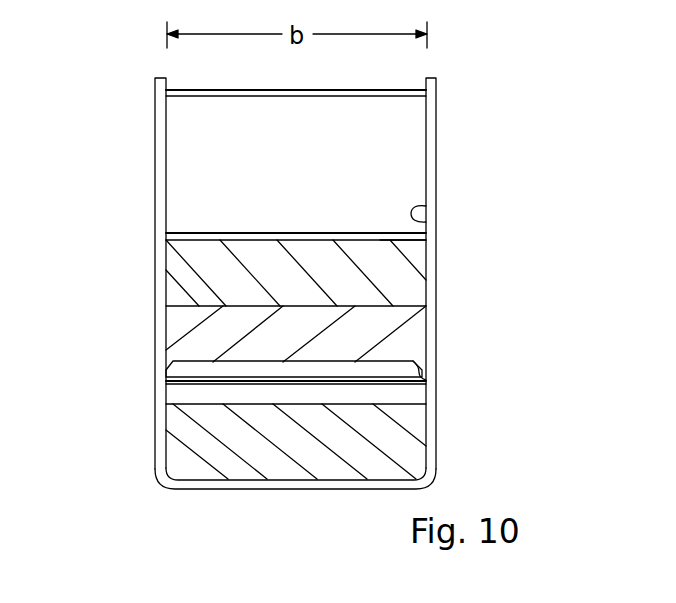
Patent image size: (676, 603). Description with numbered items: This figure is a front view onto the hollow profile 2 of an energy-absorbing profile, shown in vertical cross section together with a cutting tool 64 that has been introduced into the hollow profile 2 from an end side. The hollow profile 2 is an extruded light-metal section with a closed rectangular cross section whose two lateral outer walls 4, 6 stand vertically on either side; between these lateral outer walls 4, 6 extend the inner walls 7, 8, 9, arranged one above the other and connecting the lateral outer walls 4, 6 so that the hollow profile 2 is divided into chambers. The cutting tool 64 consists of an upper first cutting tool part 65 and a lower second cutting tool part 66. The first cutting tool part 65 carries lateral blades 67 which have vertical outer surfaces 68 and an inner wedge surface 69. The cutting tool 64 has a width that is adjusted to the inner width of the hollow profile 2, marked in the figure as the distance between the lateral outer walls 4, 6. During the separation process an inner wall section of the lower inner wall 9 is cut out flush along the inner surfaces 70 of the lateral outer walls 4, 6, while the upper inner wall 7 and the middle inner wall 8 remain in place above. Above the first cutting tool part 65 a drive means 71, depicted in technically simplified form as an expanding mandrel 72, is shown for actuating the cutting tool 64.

The hollow profile 2 is at (298, 283).
The lateral outer wall 4 is at (155, 162).
The lateral outer wall 6 is at (437, 175).
The inner wall 7 is at (190, 97).
The inner wall 8 is at (186, 232).
The inner wall 9 is at (173, 387).
The cutting tool 64 is at (426, 317).
The first cutting tool part 65 is at (180, 323).
The second cutting tool part 66 is at (180, 460).
The lateral blades 67 is at (420, 363).
The vertical outer surfaces 68 is at (423, 372).
The inner wedge surface 69 is at (425, 382).
The inner surfaces 70 is at (426, 223).
The drive means 71 is at (407, 249).
The expanding mandrel 72 is at (183, 275).